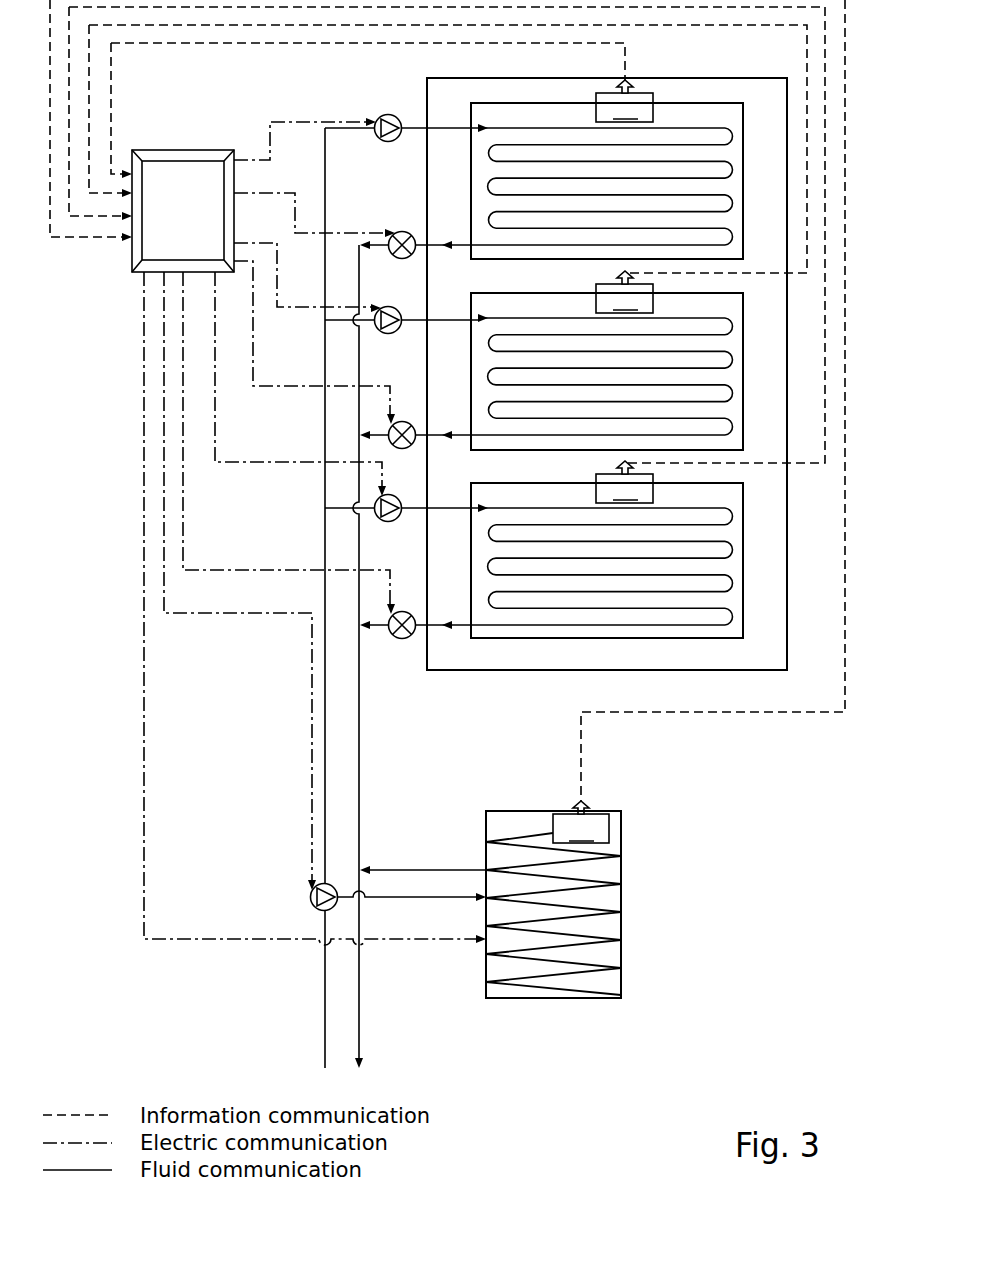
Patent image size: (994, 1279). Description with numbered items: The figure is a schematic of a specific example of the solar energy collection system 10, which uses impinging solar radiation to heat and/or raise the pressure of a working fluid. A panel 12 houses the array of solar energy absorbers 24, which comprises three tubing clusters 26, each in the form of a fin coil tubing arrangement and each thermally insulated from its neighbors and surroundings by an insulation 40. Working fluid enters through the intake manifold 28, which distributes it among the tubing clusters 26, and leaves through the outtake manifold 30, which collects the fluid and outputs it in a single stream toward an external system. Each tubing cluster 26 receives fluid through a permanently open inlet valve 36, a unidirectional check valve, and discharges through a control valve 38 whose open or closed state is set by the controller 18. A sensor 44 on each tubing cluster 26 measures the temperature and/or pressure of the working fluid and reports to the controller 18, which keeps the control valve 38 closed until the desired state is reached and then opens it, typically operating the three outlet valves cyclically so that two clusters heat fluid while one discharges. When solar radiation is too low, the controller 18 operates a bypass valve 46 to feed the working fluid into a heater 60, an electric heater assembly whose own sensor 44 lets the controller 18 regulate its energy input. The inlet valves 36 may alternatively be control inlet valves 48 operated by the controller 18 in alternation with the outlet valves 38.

The solar energy collection system 10 is at (124, 622).
The panel 12 is at (607, 404).
The controller 18 is at (197, 221).
The array of solar energy absorbers 24 is at (516, 688).
The tubing cluster 26 is at (685, 128).
The intake manifold 28 is at (324, 1046).
The outtake manifold 30 is at (361, 1037).
The inlet valve 36 is at (386, 114).
The control valve 38 is at (410, 232).
The insulation 40 is at (743, 178).
The sensor 44 is at (603, 461).
The bypass valve 46 is at (313, 904).
The control inlet valve 48 is at (343, 292).
The heater 60 is at (533, 987).